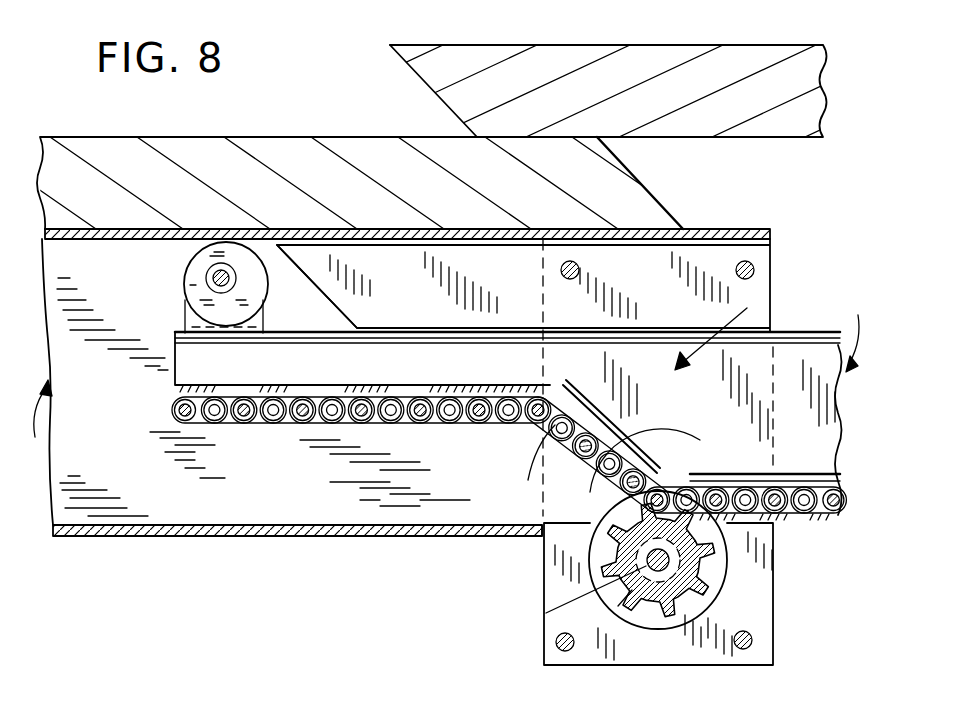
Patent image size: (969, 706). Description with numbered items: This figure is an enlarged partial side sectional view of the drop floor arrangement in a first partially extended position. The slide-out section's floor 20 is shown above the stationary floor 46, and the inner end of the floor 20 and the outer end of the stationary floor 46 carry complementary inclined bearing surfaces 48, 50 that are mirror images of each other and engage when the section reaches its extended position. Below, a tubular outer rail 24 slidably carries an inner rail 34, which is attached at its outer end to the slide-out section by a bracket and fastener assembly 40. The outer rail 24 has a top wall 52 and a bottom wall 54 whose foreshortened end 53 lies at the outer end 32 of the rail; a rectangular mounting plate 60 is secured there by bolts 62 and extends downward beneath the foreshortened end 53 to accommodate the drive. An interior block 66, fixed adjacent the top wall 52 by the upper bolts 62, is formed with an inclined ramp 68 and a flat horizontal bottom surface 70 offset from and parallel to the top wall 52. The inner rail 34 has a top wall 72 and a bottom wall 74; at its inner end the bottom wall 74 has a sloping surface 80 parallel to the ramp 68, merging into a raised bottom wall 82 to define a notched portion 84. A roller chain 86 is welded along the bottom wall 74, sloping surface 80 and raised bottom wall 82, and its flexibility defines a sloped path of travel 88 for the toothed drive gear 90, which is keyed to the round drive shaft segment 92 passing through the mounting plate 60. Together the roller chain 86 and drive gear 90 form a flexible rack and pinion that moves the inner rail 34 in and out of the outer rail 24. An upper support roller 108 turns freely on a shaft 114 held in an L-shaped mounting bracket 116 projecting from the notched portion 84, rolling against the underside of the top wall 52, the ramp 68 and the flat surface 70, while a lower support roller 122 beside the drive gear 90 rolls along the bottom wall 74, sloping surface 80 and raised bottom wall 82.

The bottom wall or floor 20 is at (652, 44).
The outer rail 24 is at (241, 382).
The outer end of the outer rail 32 is at (730, 229).
The inner rail 34 is at (844, 398).
The bracket and fastener assembly 40 is at (397, 701).
The stationary floor 46 is at (295, 137).
The inclined bearing surface 48 is at (440, 104).
The inclined bearing surface 50 is at (667, 206).
The top wall 52 is at (73, 230).
The foreshortened end 53 is at (545, 537).
The bottom wall 54 is at (315, 537).
The mounting plate 60 is at (760, 622).
The bolts 62 is at (753, 262).
The interior portion or block 66 is at (757, 317).
The inclined ramp 68 is at (317, 286).
The flat horizontal bottom surface 70 is at (528, 331).
The top wall 72 is at (758, 345).
The bottom wall 74 is at (795, 475).
The sloping surface 80 is at (688, 448).
The raised bottom wall 82 is at (483, 385).
The notched or fluted portion 84 is at (718, 326).
The roller chain 86 is at (275, 420).
The sloped path of travel 88 is at (540, 460).
The drive gear or toothed sprocket 90 is at (695, 582).
The round drive shaft segment 92 is at (546, 613).
The upper support roller 108 is at (188, 287).
The shaft 114 is at (213, 275).
The L-shaped mounting bracket 116 is at (185, 324).
The lower support roller 122 is at (622, 616).